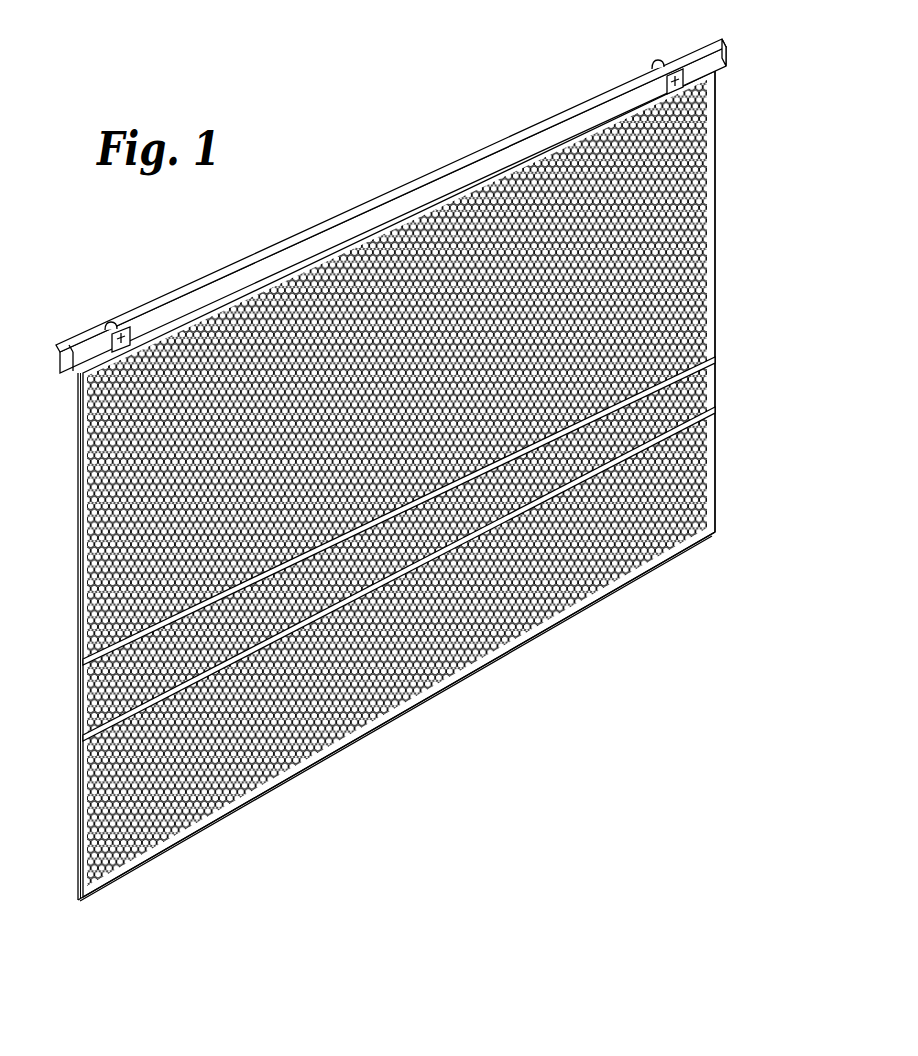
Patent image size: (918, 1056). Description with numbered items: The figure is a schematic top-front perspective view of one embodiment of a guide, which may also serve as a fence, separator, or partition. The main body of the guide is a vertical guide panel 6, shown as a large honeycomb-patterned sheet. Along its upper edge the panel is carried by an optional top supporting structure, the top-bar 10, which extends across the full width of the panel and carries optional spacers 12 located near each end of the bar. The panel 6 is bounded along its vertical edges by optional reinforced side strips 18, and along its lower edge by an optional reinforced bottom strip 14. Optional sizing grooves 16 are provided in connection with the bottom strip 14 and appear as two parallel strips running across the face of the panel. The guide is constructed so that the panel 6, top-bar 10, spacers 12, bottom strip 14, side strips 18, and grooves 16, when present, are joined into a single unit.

The vertical guide panel 6 is at (725, 164).
The top-bar 10 is at (418, 187).
The spacers 12 is at (668, 81).
The reinforced bottom strip 14 is at (385, 720).
The sizing grooves 16 is at (92, 662).
The reinforced side strips 18 is at (713, 278).